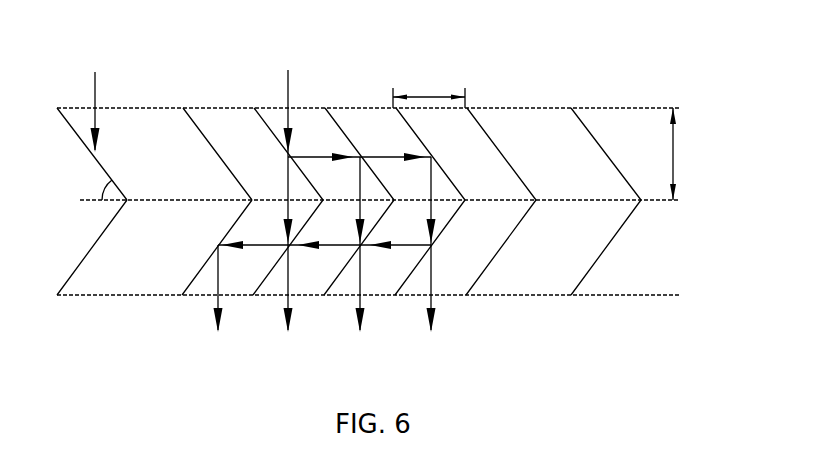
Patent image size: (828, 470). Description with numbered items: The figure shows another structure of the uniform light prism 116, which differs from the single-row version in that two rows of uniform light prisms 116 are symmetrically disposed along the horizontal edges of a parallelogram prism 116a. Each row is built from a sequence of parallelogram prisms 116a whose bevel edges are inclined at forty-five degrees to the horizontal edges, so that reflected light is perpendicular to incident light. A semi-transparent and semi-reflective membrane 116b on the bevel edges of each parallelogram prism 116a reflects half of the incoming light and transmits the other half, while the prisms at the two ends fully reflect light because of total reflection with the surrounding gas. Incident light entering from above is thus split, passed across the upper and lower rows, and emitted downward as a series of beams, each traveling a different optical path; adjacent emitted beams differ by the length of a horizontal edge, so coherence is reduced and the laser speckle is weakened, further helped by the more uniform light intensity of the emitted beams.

The uniform light prism 116 is at (383, 24).
The parallelogram prism 116a is at (227, 130).
The semi-transparent and semi-reflective membrane 116b is at (85, 258).